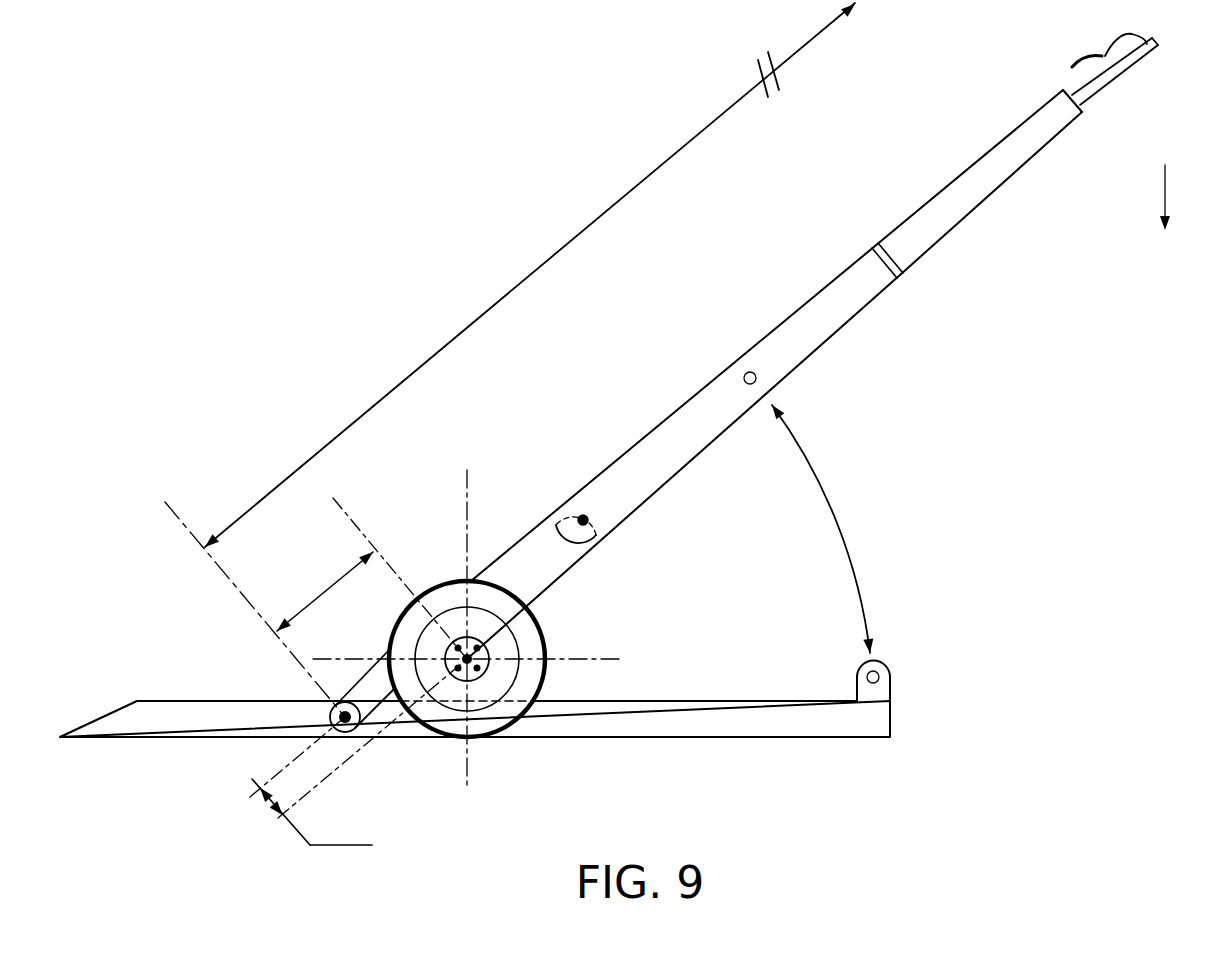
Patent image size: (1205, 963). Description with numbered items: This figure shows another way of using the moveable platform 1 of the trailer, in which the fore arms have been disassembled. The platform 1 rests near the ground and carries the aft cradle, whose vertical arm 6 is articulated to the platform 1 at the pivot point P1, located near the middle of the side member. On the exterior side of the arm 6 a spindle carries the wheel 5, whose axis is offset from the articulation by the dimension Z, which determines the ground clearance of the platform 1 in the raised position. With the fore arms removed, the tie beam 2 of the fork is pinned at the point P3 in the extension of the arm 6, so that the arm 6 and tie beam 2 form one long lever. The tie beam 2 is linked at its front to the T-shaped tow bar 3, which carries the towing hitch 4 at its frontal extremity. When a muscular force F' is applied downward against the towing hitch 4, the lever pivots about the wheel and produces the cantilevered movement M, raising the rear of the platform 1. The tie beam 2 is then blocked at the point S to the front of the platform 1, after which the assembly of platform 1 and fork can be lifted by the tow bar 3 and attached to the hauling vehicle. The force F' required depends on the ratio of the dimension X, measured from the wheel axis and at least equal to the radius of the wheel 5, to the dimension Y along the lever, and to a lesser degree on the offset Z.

The platform 1 is at (167, 716).
The tie beams 2 is at (722, 399).
The tow bar 3 is at (1010, 155).
The towing hitch 4 is at (1090, 75).
The wheel 5 is at (533, 682).
The vertical arms 6 is at (375, 687).
The pivot point P1 is at (352, 724).
The pinning point P3 is at (588, 524).
The blocking point S is at (776, 378).
The cantilevered movement M is at (832, 529).
The muscular force F' is at (1172, 173).
The dimension X is at (372, 578).
The dimension Y is at (530, 275).
The dimension Z is at (359, 752).